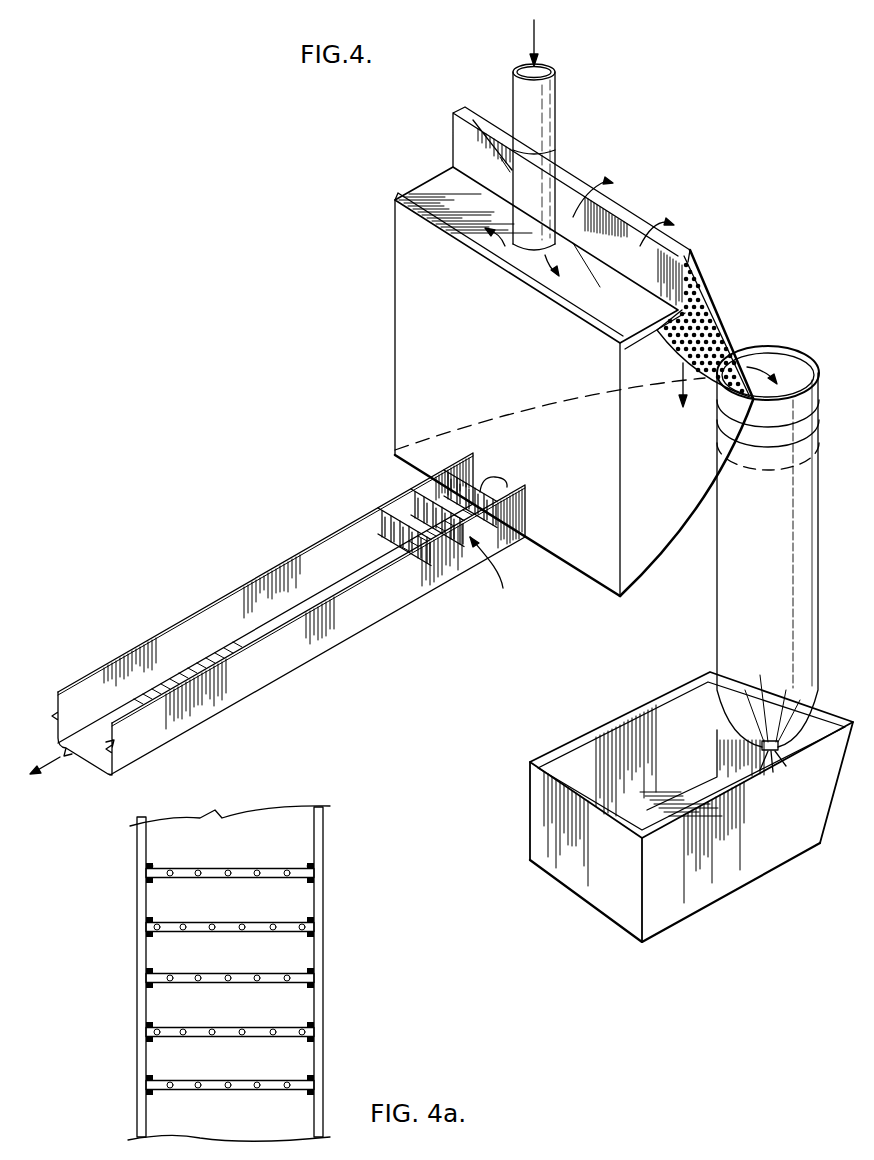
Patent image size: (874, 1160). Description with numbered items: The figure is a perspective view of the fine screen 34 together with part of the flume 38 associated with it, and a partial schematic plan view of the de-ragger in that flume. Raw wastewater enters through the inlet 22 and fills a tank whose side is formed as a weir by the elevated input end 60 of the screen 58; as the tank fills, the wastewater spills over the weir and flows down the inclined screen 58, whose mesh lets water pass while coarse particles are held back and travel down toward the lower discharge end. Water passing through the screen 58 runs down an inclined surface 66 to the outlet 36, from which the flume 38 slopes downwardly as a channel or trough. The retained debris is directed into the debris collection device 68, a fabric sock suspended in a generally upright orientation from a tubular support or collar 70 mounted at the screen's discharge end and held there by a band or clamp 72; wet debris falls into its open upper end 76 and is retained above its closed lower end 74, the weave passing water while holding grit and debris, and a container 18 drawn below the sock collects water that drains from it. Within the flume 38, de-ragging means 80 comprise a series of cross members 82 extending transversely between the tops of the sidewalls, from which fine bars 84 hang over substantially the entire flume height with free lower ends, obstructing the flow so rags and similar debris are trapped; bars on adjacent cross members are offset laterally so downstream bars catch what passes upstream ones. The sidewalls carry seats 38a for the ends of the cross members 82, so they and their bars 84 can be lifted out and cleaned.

In FIG. 4, the box / container 18 is at (683, 890).
In FIG. 4, the inlet 22 is at (548, 104).
In FIG. 4, the fine screen 34 is at (684, 112).
In FIG. 4, the outlet 36 is at (490, 480).
In FIG. 4, the flume 38 is at (378, 640).
In FIG. 4a, the flume 38 is at (332, 935).
In FIG. 4a, the seats 38a is at (146, 934).
In FIG. 4, the screen 58 is at (713, 303).
In FIG. 4, the input end 60 is at (575, 175).
In FIG. 4, the inclined surface 66 is at (655, 560).
In FIG. 4, the debris collection device 68 is at (826, 620).
In FIG. 4, the tubular support 70 is at (800, 367).
In FIG. 4, the band 72 is at (800, 430).
In FIG. 4, the closed lower end 74 is at (772, 758).
In FIG. 4, the open upper end 76 is at (773, 346).
In FIG. 4, the de-ragging means 80 is at (496, 577).
In FIG. 4, the cross members 82 is at (426, 488).
In FIG. 4a, the cross members 82 is at (160, 1080).
In FIG. 4, the fine bars 84 is at (373, 527).
In FIG. 4a, the fine bars 84 is at (197, 866).